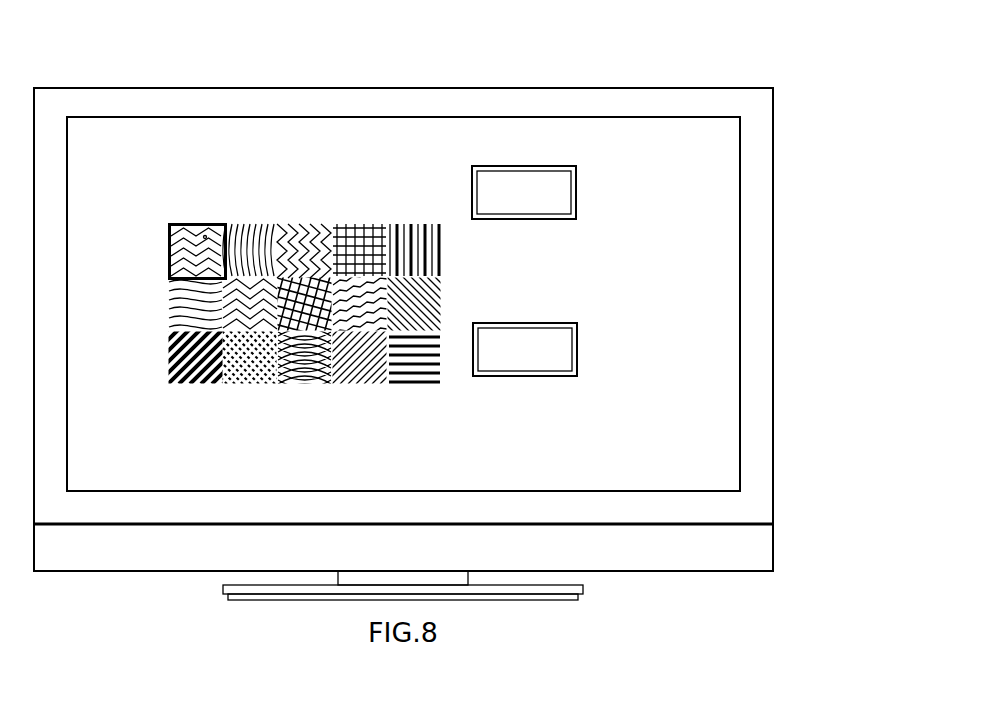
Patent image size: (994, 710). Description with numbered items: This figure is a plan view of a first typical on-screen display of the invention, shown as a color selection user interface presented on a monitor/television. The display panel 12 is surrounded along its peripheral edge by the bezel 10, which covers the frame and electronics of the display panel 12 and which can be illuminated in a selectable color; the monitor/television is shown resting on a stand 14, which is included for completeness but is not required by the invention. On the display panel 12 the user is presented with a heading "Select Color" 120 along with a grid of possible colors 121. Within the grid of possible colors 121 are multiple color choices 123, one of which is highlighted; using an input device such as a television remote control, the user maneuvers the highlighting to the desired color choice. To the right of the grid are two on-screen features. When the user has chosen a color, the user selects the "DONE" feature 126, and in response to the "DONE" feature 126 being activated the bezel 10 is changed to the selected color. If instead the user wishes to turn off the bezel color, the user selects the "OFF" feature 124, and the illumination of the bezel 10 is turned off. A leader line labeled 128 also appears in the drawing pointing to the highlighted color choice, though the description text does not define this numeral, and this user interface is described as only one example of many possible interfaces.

The bezel 10 is at (740, 104).
The display panel 12 is at (718, 154).
The stand 14 is at (565, 588).
The "Select Color" heading 120 is at (276, 164).
The grid of possible colors 121 is at (155, 263).
The color choices 123 is at (252, 305).
The "OFF" feature 124 is at (556, 177).
The "DONE" feature 126 is at (566, 344).
The selection indicator 128 is at (205, 237).